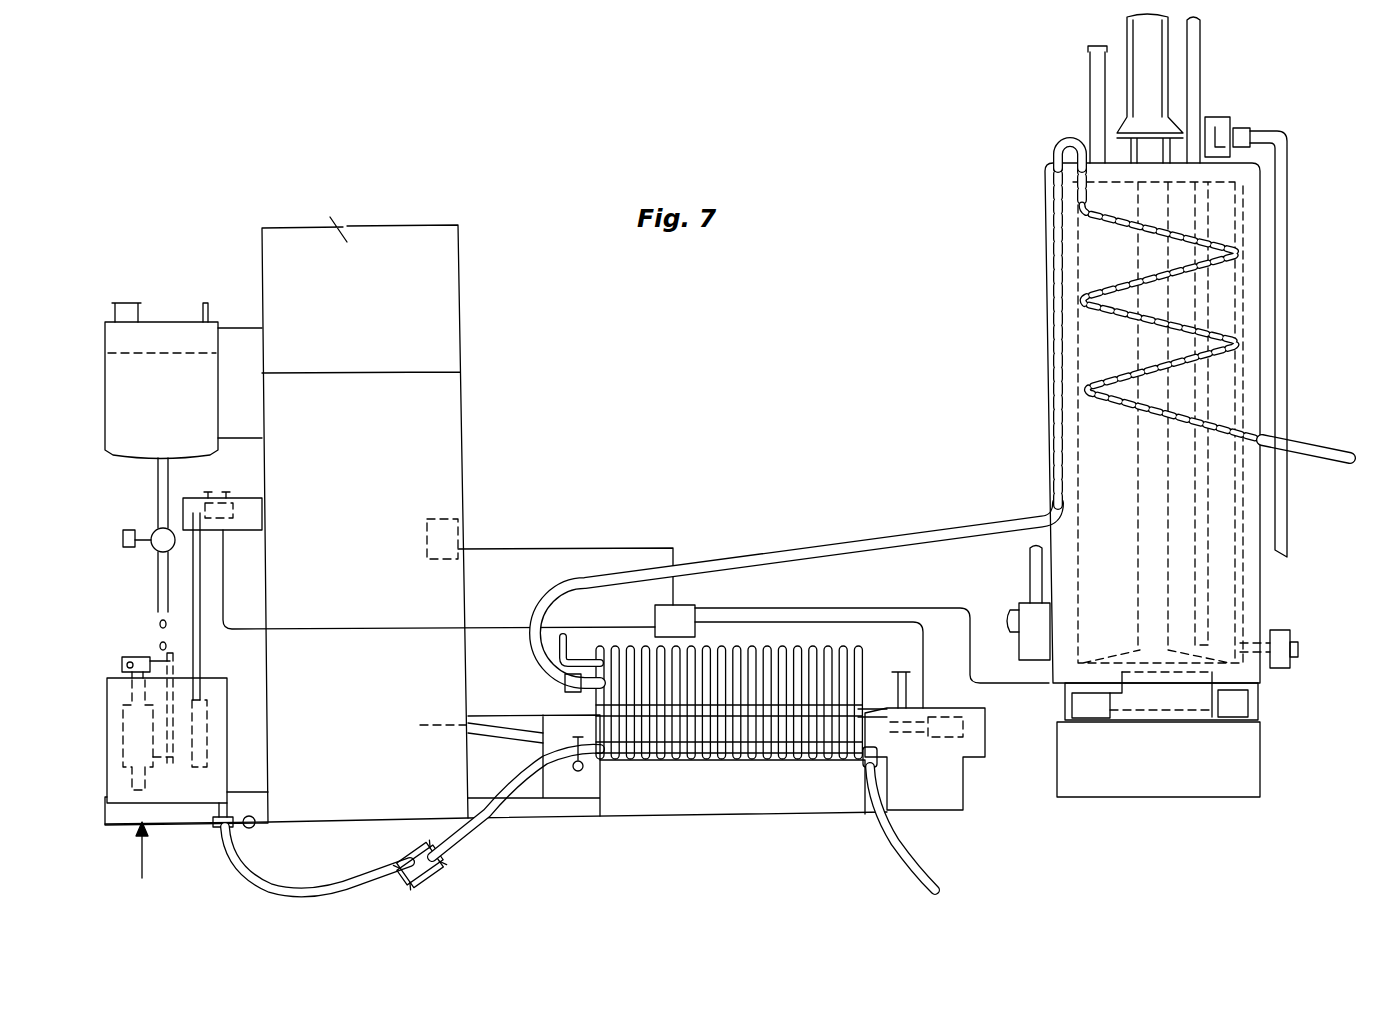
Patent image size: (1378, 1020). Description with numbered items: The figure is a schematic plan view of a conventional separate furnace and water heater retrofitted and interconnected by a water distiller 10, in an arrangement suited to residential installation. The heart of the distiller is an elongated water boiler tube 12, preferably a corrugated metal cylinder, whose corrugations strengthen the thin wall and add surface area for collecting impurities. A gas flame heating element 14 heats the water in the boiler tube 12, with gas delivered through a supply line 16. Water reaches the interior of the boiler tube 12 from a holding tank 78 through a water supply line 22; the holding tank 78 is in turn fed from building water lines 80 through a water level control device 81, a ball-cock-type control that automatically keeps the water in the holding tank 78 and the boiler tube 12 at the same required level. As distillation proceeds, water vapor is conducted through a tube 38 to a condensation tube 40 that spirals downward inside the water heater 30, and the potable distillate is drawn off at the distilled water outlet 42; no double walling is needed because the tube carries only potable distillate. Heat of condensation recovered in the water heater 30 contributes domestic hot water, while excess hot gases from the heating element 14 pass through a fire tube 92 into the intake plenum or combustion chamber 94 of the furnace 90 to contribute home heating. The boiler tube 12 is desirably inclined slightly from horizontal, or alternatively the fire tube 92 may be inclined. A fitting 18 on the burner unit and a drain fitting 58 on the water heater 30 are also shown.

The water distiller 10 is at (810, 613).
The water boiler tube 12 is at (847, 645).
The gas flame heating element 14 is at (985, 742).
The supply line 16 is at (905, 695).
The control unit 18 is at (963, 722).
The water supply line 22 is at (470, 835).
The water heater 30 is at (1045, 410).
The tube 38 is at (807, 553).
The condensation tube 40 is at (1232, 250).
The distilled water outlet 42 is at (1350, 455).
The drain fitting 58 is at (1300, 650).
The holding tank 78 is at (108, 740).
The water supply line 80 is at (149, 864).
The water level control device 81 is at (132, 700).
The furnace 90 is at (460, 315).
The fire tube 92 is at (503, 727).
The combustion chamber 94 is at (353, 803).